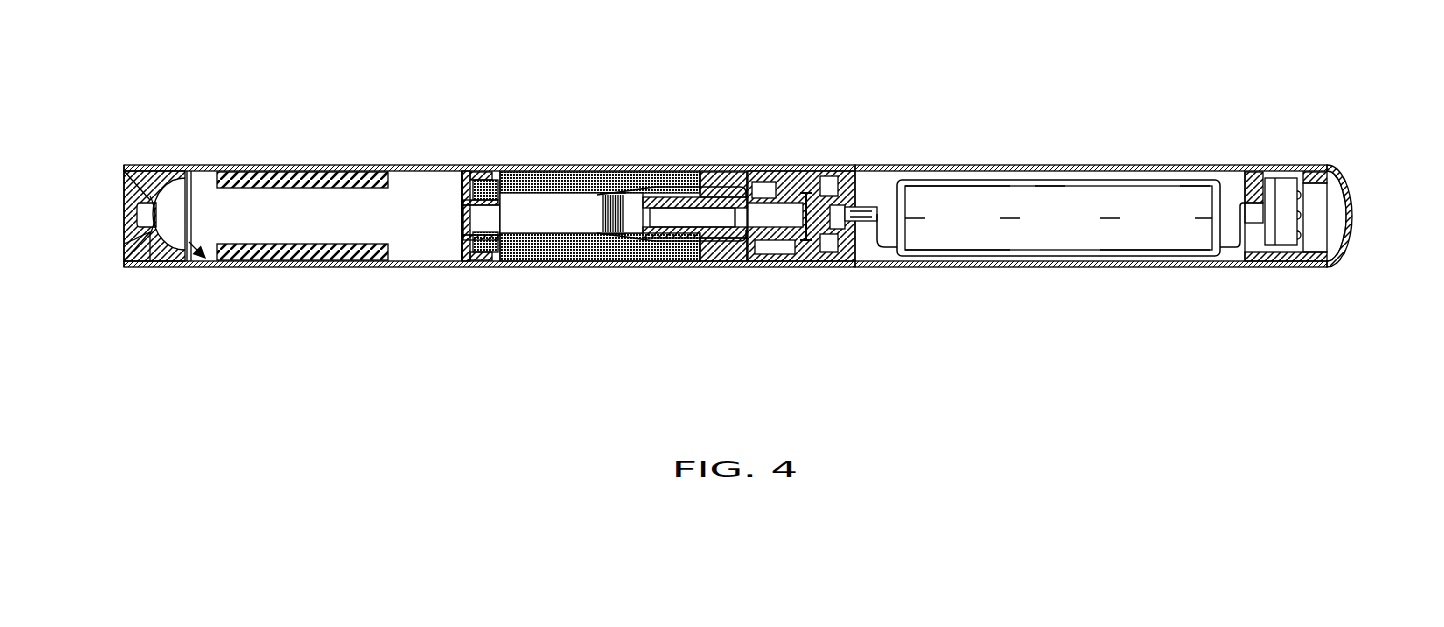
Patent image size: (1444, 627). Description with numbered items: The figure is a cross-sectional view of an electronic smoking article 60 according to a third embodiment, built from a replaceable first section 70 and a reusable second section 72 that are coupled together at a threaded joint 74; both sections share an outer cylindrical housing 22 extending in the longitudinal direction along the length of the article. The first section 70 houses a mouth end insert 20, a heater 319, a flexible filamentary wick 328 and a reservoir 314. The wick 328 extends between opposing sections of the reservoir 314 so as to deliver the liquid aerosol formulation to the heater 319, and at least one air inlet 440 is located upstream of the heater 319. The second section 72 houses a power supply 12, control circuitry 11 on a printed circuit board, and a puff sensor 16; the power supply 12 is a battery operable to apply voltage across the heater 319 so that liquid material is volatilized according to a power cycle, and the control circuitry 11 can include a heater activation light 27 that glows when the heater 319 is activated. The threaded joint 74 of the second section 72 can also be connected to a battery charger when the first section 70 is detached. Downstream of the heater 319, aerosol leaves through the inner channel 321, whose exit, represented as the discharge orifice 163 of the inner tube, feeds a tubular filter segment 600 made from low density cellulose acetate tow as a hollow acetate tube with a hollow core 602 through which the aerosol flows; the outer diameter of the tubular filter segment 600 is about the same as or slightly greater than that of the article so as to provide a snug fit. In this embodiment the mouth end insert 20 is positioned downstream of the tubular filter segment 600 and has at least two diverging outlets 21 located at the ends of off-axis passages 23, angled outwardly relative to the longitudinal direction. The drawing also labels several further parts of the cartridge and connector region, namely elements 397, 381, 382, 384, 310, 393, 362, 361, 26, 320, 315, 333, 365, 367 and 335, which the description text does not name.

The electronic smoking article 60 is at (738, 143).
The first section 70 is at (493, 155).
The second section 72 is at (1084, 156).
The mouth end insert 20 is at (148, 165).
The diverging outlets 21 is at (124, 242).
The off-axis passages 23 is at (132, 268).
The air passage divider 397 is at (183, 250).
The tubular filter segment 600 is at (268, 172).
The hollow core 602 is at (333, 267).
The discharge orifice of the inner tube 163 is at (462, 215).
The connector wall 381 is at (461, 155).
The connector flange 382 is at (478, 165).
The seal 384 is at (479, 208).
The inner tube 310 is at (492, 218).
The partition 393 is at (508, 165).
The reservoir 314 is at (527, 165).
The reservoir lower portion 362 is at (549, 268).
The inner channel 321 is at (562, 226).
The heater 319 is at (598, 195).
The filamentary wick 328 is at (627, 195).
The electrical leads 361 is at (684, 188).
The atomizer housing 26 is at (700, 195).
The air passage 320 is at (697, 240).
The housing end portions 315 is at (637, 236).
The connector body 333 is at (808, 190).
The connector cavity 365 is at (729, 156).
The air inlet 440 is at (763, 172).
The air inlet 367 is at (742, 279).
The insulator 335 is at (765, 252).
The threaded joint 74 is at (826, 252).
The outer cylindrical housing 22 is at (1003, 165).
The power supply 12 is at (1180, 186).
The puff sensor 16 is at (1283, 190).
The control circuitry 11 is at (1268, 238).
The heater activation light 27 is at (1334, 228).